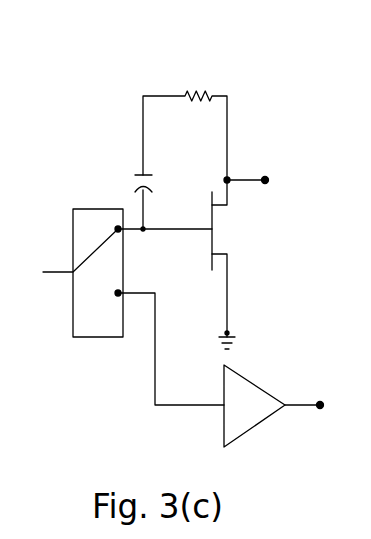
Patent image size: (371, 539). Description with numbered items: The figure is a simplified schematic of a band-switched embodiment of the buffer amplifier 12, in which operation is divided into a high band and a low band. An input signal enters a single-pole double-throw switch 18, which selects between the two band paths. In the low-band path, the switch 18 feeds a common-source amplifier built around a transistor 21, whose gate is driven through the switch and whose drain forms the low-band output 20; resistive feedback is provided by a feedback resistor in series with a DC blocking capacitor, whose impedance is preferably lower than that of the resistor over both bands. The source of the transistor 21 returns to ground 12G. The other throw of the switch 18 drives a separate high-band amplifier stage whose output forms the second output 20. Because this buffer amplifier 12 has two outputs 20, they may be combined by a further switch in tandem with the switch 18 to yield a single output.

The buffer amplifier 12 is at (127, 77).
The ground 12G is at (229, 334).
The single-pole double-throw switch 18 is at (82, 248).
The output 20 is at (250, 178).
The transistor 21 is at (197, 230).